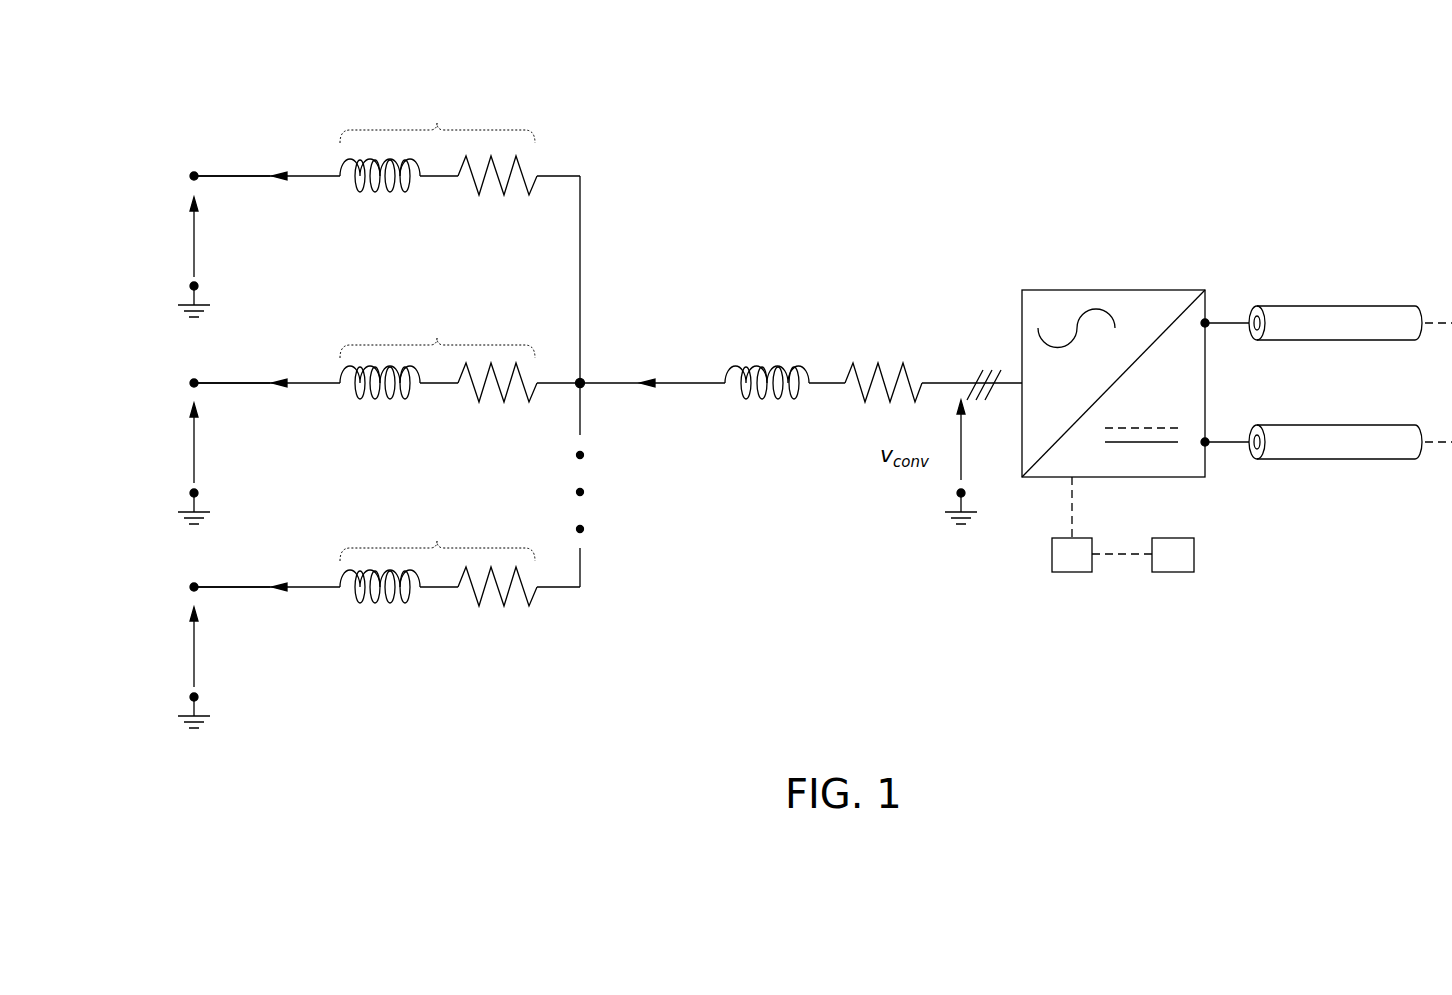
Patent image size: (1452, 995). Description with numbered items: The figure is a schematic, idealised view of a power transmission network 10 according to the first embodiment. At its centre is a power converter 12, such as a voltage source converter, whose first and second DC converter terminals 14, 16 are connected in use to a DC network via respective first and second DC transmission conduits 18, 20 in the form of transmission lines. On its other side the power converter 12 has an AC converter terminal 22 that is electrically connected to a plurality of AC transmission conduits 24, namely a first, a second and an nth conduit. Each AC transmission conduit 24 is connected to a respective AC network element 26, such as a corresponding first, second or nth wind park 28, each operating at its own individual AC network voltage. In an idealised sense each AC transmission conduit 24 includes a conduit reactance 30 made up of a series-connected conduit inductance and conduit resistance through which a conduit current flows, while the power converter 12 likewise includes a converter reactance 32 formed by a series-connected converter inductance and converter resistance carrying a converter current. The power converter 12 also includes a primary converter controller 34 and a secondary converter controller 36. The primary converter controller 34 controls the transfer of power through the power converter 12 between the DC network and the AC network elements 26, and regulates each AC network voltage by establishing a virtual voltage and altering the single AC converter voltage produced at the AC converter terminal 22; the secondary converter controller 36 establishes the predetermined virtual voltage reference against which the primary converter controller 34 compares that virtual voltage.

The power transmission network 10 is at (862, 64).
The power converter 12 is at (1125, 288).
The first DC converter terminal 14 is at (1210, 320).
The second DC converter terminal 16 is at (1210, 446).
The first DC transmission conduit 18 is at (1385, 306).
The second DC transmission conduit 20 is at (1350, 460).
The AC converter terminal 22 is at (585, 388).
The AC transmission conduit 24 is at (208, 172).
The AC network element 26 is at (173, 433).
The wind park 28 is at (188, 176).
The conduit reactance 30 is at (437, 126).
The converter reactance 32 is at (922, 408).
The primary converter controller 34 is at (1070, 575).
The secondary converter controller 36 is at (1172, 575).